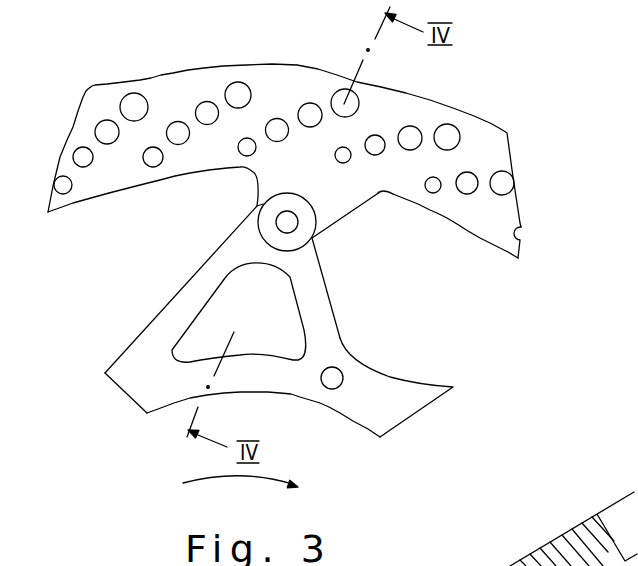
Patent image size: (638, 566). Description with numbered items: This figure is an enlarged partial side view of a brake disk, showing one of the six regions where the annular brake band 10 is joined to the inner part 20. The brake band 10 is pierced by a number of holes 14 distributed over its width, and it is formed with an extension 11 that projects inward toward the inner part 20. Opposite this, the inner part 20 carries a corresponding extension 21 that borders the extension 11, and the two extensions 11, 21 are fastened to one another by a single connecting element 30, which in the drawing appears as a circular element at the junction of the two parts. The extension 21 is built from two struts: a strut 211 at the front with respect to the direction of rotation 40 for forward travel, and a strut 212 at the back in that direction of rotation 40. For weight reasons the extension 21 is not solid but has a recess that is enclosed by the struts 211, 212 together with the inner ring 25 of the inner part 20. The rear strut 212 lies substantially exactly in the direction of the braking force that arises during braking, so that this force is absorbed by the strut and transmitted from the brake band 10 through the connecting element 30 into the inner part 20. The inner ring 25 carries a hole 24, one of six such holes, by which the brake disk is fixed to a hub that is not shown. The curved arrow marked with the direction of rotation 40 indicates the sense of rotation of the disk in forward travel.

The brake band 10 is at (423, 110).
The holes 14 is at (447, 138).
The extensions 11 is at (333, 197).
The connecting element 30 is at (262, 222).
The extensions 21 is at (293, 260).
The strut 211 is at (318, 308).
The strut 212 is at (182, 300).
The inner part 20 is at (285, 382).
The holes 24 is at (335, 380).
The inner ring 25 is at (168, 392).
The direction of rotation 40 is at (237, 483).